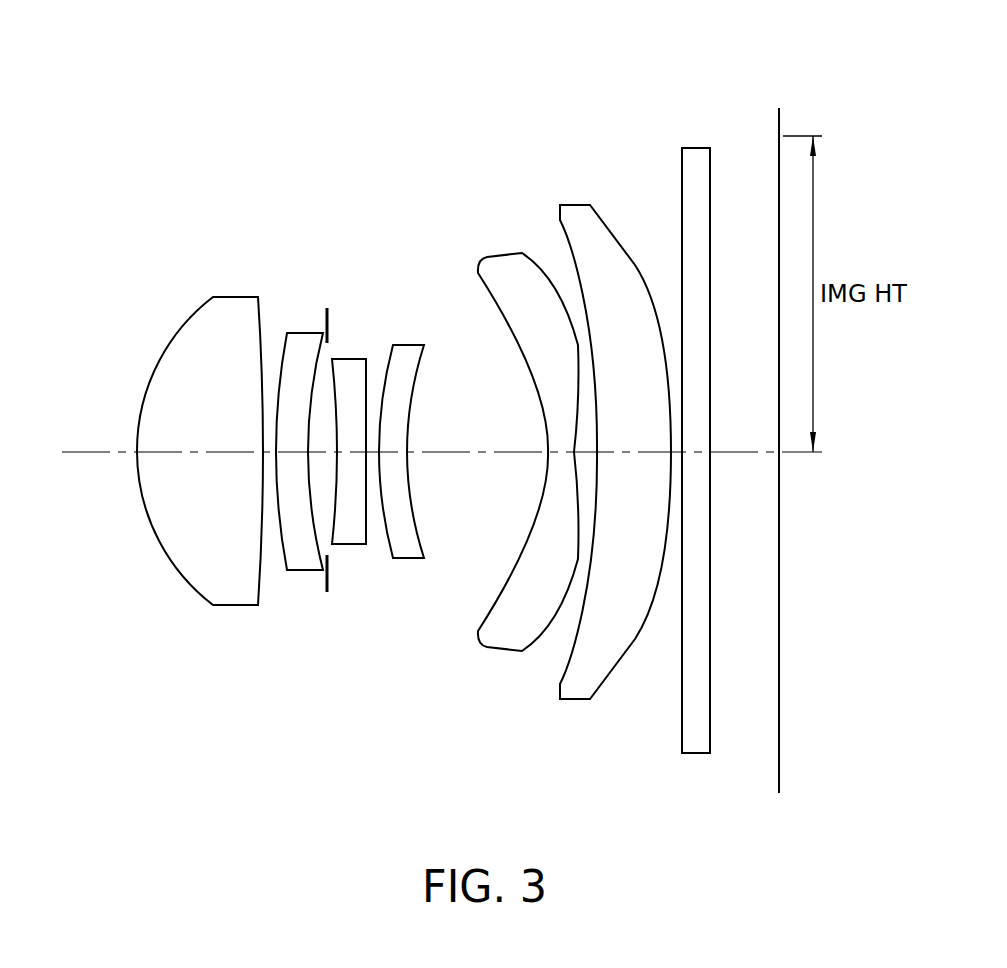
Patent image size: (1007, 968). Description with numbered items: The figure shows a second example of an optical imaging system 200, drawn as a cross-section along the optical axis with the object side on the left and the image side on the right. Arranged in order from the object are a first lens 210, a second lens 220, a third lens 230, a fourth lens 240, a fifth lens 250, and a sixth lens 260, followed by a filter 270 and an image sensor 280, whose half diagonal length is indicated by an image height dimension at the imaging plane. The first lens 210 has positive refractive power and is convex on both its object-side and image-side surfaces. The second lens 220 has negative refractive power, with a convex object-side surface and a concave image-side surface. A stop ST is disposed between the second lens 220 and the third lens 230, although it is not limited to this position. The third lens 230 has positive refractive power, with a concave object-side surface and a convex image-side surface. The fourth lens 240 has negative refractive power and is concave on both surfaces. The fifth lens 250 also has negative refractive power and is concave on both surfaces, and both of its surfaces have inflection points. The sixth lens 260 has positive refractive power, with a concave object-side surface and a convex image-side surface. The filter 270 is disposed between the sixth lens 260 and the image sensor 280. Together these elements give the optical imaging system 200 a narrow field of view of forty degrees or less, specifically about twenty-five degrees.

The optical imaging system 200 is at (371, 209).
The first lens 210 is at (208, 572).
The second lens 220 is at (303, 562).
The stop ST is at (327, 330).
The third lens 230 is at (348, 538).
The fourth lens 240 is at (407, 550).
The fifth lens 250 is at (506, 632).
The sixth lens 260 is at (578, 690).
The filter 270 is at (698, 753).
The image sensor 280 is at (779, 160).